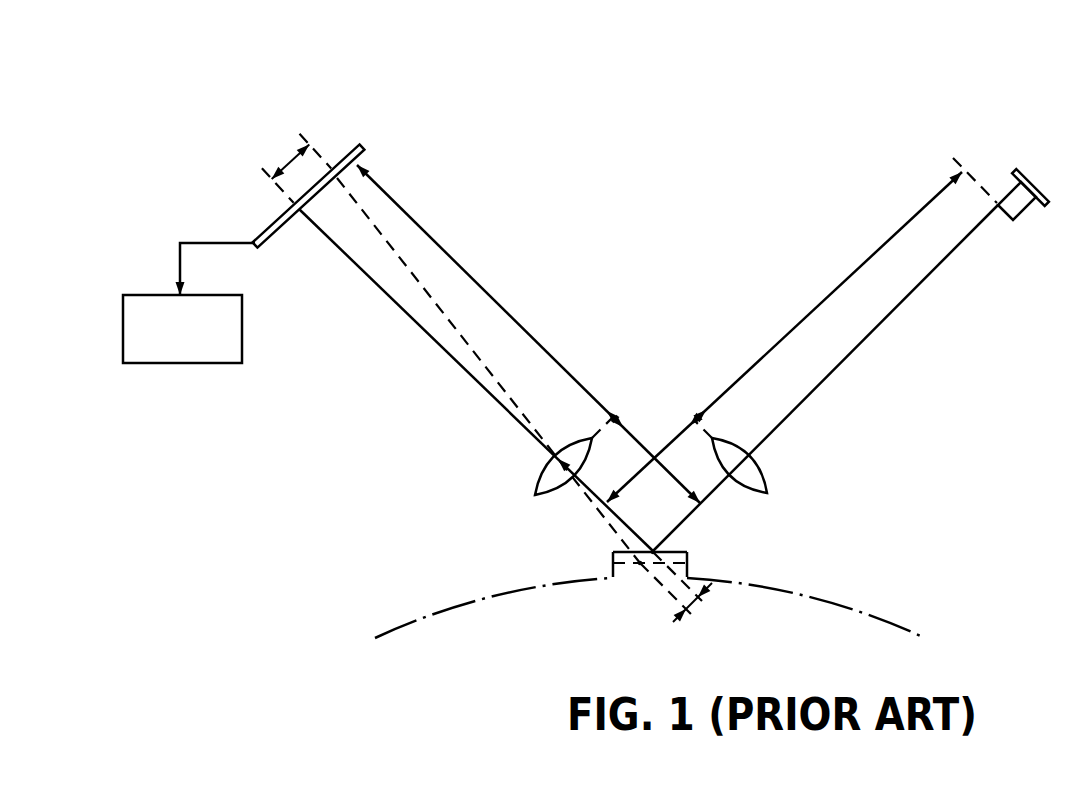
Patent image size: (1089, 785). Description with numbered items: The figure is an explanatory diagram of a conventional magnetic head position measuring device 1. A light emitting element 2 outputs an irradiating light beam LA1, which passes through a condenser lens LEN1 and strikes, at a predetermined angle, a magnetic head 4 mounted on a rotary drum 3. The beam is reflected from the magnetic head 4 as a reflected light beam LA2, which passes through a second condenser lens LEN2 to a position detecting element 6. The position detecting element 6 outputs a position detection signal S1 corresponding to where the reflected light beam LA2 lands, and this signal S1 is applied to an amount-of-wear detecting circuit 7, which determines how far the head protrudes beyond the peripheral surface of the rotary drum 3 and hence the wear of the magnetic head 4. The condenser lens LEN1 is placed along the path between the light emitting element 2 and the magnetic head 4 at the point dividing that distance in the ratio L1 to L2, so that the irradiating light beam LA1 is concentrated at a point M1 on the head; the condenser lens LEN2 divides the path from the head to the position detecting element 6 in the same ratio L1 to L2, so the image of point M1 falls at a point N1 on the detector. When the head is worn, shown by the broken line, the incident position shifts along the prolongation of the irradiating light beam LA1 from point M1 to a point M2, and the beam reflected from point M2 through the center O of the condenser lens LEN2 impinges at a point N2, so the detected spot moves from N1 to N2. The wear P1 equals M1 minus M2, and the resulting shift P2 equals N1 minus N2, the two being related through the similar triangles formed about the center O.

The magnetic head position measuring device 1 is at (737, 94).
The light emitting element 2 is at (1047, 205).
The rotary drum 3 is at (915, 627).
The magnetic head 4 is at (690, 572).
The position detecting element 6 is at (362, 150).
The amount-of-wear detecting circuit 7 is at (218, 363).
The position detection signal S1 is at (200, 242).
The first distance of lens positioning ratio L1 is at (458, 267).
The second distance of lens positioning ratio L2 is at (727, 508).
The irradiating light beam LA1 is at (868, 340).
The reflected light beam LA2 is at (412, 322).
The condenser lens on irradiation side LEN1 is at (767, 493).
The condenser lens on reflection side LEN2 is at (535, 495).
The center of condenser lens LEN2 O is at (560, 480).
The incident point on unworn magnetic head M1 is at (653, 552).
The incident point on worn magnetic head M2 is at (638, 566).
The wear P1 is at (693, 612).
The amount of shift of incident position P2 is at (287, 163).
The image point of M1 on position detecting element N1 is at (300, 213).
The shifted incident point on position detecting element N2 is at (337, 178).